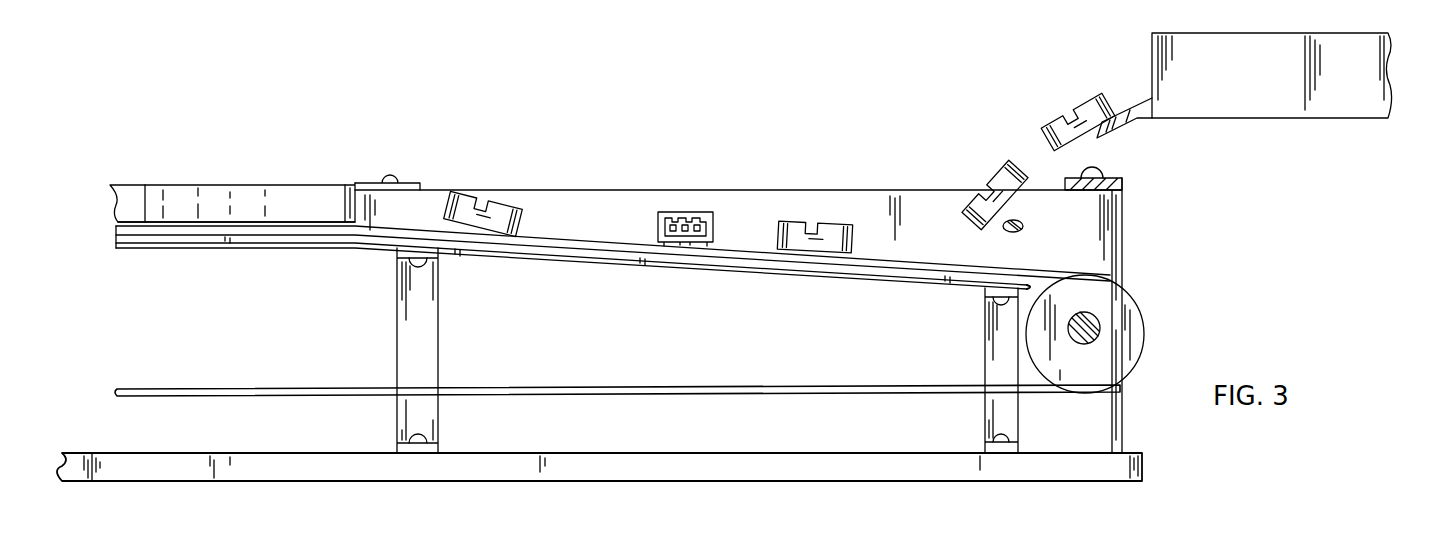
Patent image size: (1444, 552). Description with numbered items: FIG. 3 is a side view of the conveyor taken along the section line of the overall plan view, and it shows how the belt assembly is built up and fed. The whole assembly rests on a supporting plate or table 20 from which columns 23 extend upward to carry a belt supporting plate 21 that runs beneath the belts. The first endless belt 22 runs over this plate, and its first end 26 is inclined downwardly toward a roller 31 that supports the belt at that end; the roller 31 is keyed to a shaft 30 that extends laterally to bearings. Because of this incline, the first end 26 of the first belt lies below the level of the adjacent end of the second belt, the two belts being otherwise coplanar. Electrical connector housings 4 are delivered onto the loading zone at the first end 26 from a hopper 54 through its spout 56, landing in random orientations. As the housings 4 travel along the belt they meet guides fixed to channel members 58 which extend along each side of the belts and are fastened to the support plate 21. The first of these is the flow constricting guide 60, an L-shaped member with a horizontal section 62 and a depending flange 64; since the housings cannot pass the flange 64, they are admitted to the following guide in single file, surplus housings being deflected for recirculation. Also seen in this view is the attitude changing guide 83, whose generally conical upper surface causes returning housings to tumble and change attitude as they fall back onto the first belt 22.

The electrical connector housings 4 is at (802, 227).
The supporting plate or table 20 is at (652, 478).
The belt supporting plate 21 is at (535, 258).
The first endless belt 22 is at (577, 223).
The columns 23 is at (432, 324).
The first end of first belt 26 is at (927, 262).
The shaft 30 is at (1090, 345).
The roller 31 is at (1098, 296).
The hopper 54 is at (1262, 108).
The spout 56 is at (1128, 125).
The channel members 58 is at (442, 190).
The flow constricting guide 60 is at (336, 174).
The horizontal section 62 is at (255, 183).
The depending flange 64 is at (298, 215).
The attitude changing guide 83 is at (1022, 228).